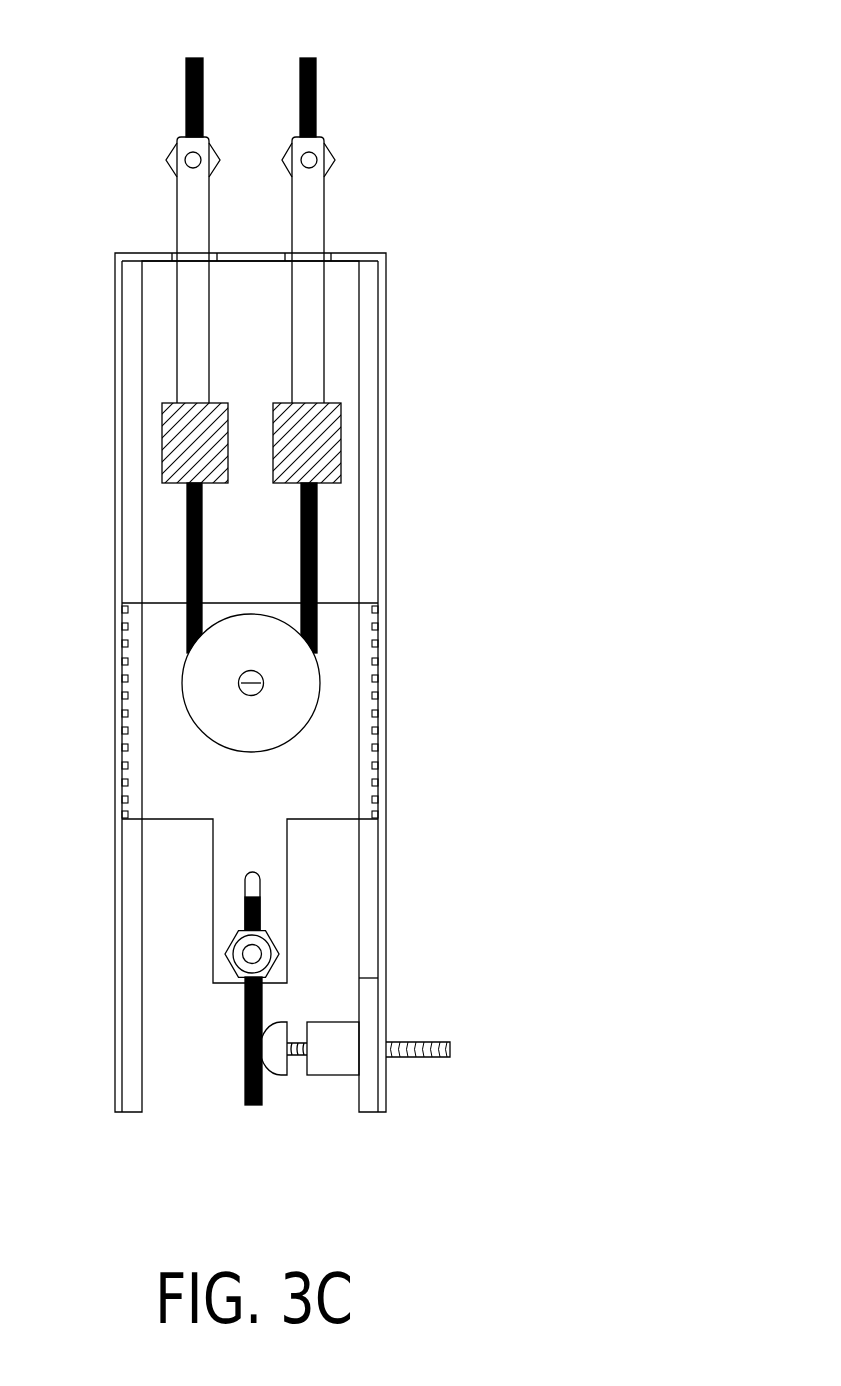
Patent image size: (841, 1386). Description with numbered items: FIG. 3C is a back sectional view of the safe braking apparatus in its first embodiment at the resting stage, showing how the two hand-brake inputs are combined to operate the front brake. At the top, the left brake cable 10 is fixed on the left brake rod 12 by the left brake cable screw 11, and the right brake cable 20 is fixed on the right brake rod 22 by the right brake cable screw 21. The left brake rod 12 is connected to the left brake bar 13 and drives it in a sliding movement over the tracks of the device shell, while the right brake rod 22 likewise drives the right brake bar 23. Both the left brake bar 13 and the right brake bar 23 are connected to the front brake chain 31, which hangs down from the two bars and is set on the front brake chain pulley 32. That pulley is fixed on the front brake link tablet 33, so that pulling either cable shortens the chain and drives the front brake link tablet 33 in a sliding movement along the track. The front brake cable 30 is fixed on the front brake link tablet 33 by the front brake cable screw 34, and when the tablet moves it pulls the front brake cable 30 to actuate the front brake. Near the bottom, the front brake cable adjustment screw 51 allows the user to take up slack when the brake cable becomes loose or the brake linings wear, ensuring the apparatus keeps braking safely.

The left brake cable 10 is at (309, 53).
The left brake cable screw 11 is at (326, 147).
The left brake rod 12 is at (312, 310).
The left brake bar 13 is at (312, 437).
The right brake cable 20 is at (197, 53).
The right brake cable screw 21 is at (177, 147).
The right brake rod 22 is at (188, 303).
The right brake bar 23 is at (188, 435).
The front brake cable 30 is at (248, 1107).
The front brake chain 31 is at (320, 552).
The front brake chain pulley 32 is at (210, 694).
The front brake link tablet 33 is at (327, 755).
The front brake cable screw 34 is at (273, 943).
The front brake cable adjustment screw 51 is at (450, 1043).